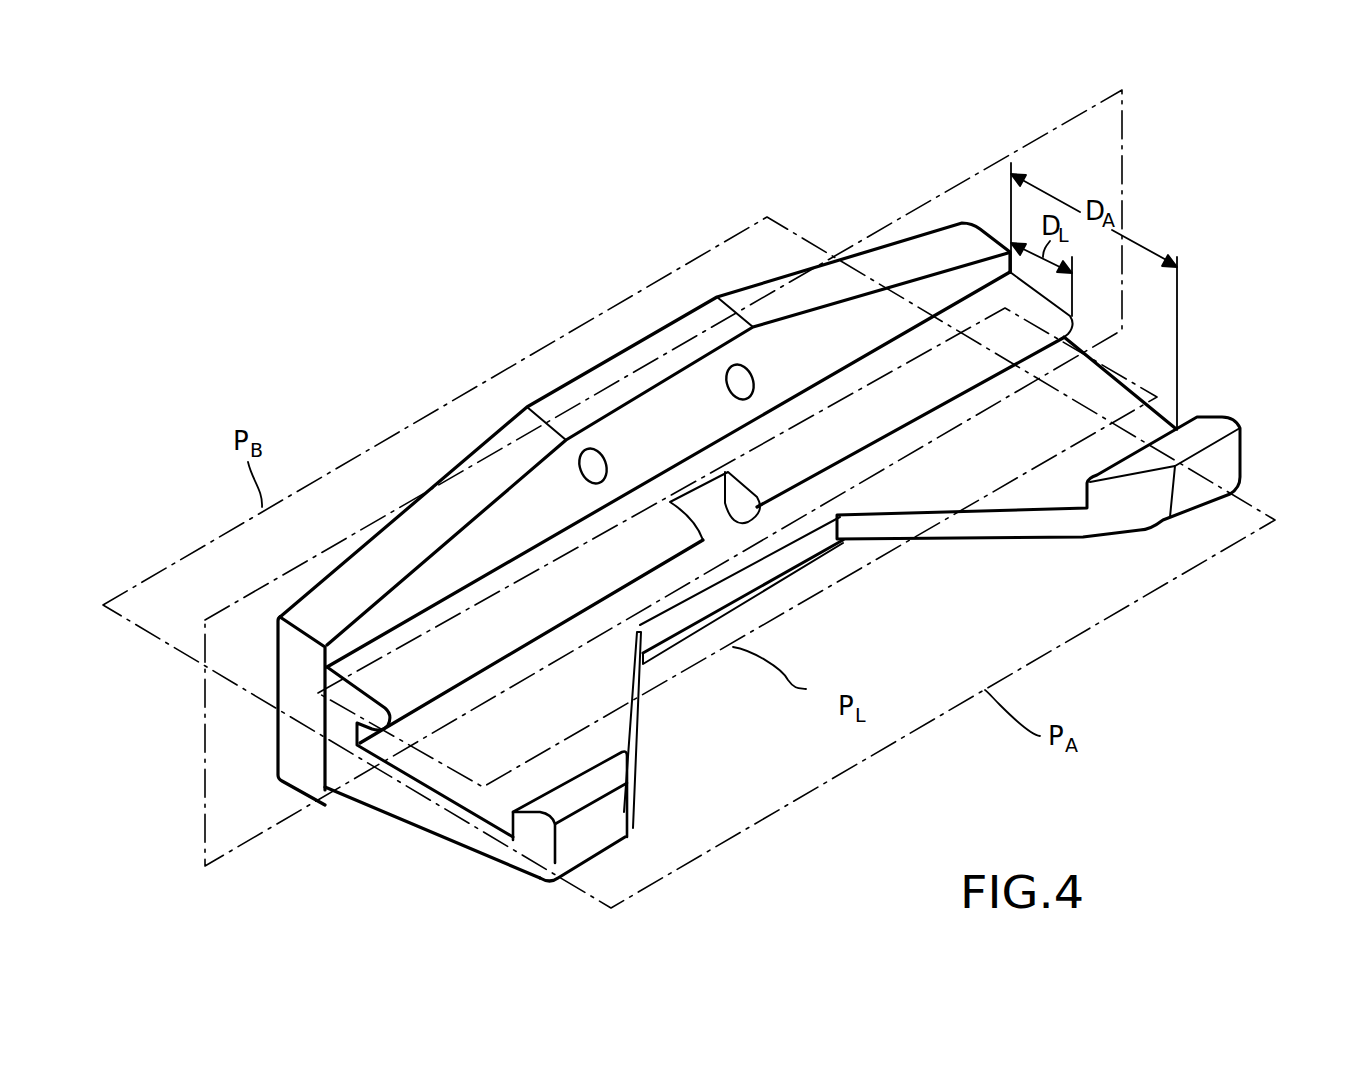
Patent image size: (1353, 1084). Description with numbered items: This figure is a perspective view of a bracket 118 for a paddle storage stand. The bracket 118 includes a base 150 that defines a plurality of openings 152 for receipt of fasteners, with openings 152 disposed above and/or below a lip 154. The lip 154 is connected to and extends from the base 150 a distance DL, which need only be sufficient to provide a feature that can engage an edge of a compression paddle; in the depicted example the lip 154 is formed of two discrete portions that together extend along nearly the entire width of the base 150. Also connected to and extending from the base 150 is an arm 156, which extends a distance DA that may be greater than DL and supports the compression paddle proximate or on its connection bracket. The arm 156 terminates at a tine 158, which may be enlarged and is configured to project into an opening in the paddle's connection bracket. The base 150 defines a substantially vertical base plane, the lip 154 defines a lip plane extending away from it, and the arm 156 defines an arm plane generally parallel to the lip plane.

The bracket 118 is at (1214, 189).
The base 150 is at (825, 286).
The openings 152 is at (593, 452).
The lip 154 is at (342, 708).
The arms 156 is at (468, 788).
The tine 158 is at (603, 785).